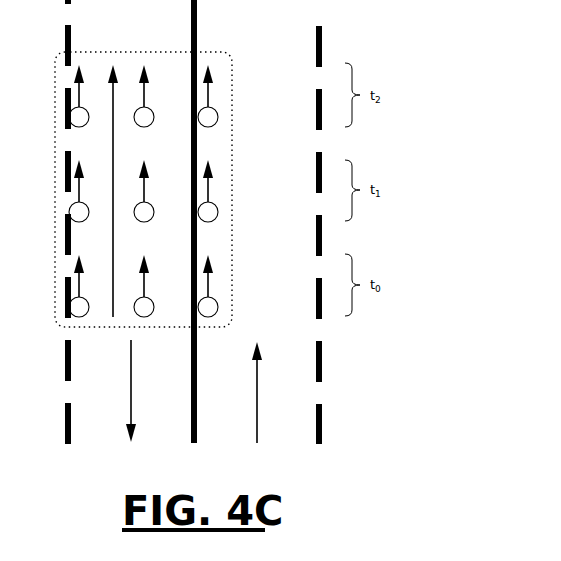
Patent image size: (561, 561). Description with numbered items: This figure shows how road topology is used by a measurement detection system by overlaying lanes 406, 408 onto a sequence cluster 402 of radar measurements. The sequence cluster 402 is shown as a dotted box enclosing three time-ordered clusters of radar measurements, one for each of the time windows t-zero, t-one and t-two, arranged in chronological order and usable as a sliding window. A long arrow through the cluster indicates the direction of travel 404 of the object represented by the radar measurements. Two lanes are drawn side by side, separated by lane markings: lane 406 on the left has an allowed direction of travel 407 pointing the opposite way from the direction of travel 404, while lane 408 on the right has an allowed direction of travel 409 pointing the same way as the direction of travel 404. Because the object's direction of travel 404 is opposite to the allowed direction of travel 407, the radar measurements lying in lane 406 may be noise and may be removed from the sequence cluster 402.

The sequence cluster 402 is at (167, 189).
The direction of travel 404 is at (127, 191).
The lane 406 is at (138, 31).
The allowed direction of travel 407 is at (110, 391).
The lane 408 is at (275, 31).
The allowed direction of travel 409 is at (237, 392).